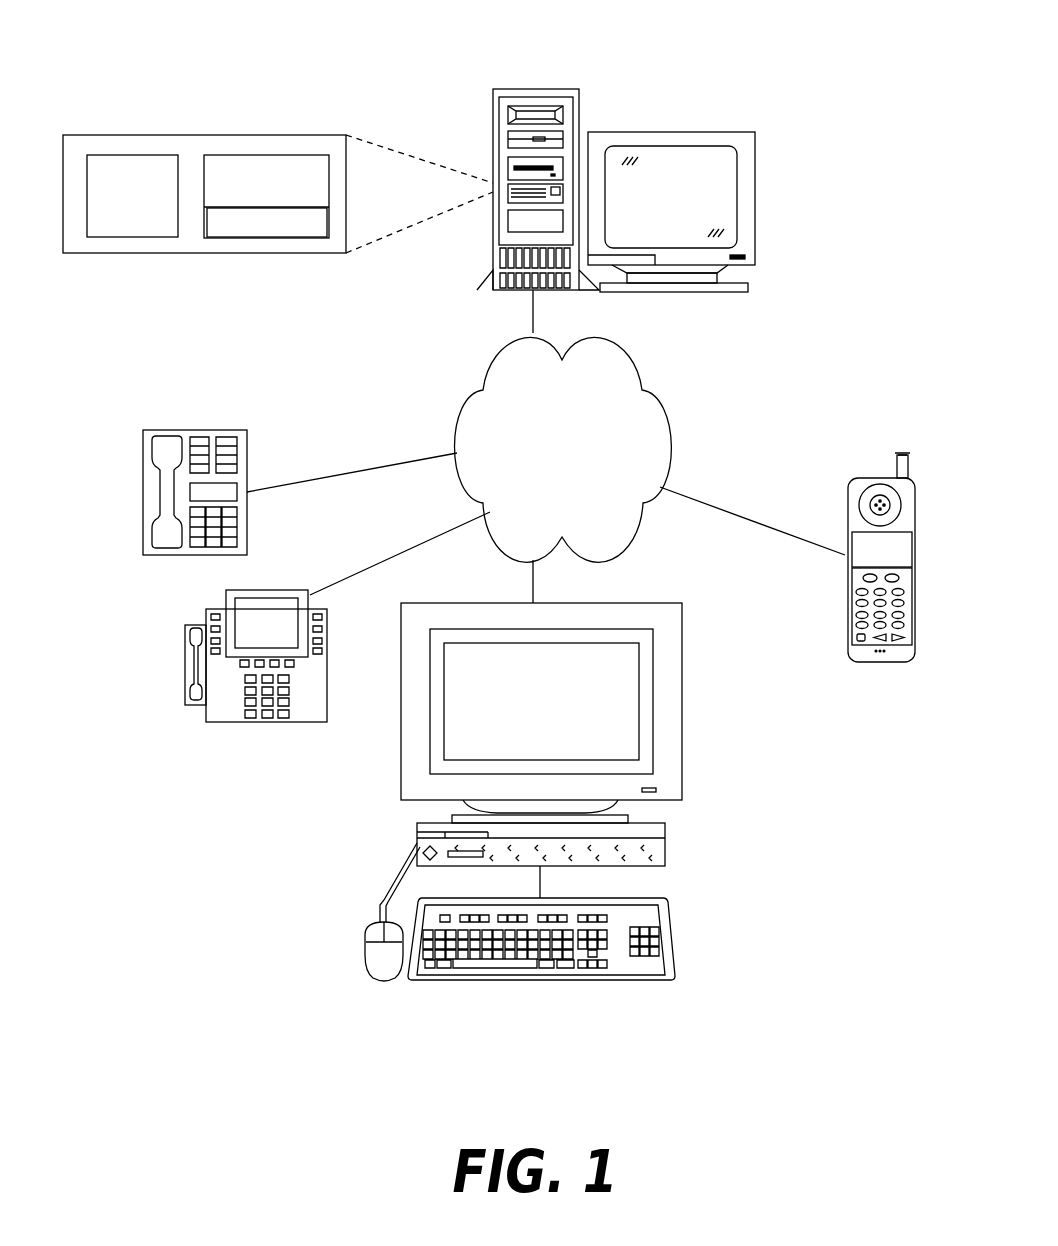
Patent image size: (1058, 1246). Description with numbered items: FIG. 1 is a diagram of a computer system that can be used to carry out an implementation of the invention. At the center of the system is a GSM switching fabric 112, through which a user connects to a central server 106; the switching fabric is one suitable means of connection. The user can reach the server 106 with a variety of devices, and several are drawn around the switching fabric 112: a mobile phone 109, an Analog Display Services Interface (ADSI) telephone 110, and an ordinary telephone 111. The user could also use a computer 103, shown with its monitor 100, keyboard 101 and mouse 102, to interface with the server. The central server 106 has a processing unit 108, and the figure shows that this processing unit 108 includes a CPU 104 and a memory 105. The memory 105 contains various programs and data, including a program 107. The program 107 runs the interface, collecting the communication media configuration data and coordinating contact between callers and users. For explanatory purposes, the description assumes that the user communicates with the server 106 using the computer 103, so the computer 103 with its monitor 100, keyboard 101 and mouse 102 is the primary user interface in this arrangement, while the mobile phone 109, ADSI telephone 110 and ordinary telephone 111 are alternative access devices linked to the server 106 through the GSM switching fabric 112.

The monitor 100 is at (683, 754).
The keyboard 101 is at (675, 955).
The mouse 102 is at (383, 982).
The computer 103 is at (417, 830).
The CPU 104 is at (152, 237).
The memory 105 is at (204, 196).
The central server 106 is at (740, 132).
The program 107 is at (277, 238).
The processing unit 108 is at (539, 89).
The mobile phone 109 is at (888, 663).
The ADSI telephone 110 is at (205, 712).
The ordinary telephone 111 is at (142, 470).
The GSM switching fabric 112 is at (662, 407).